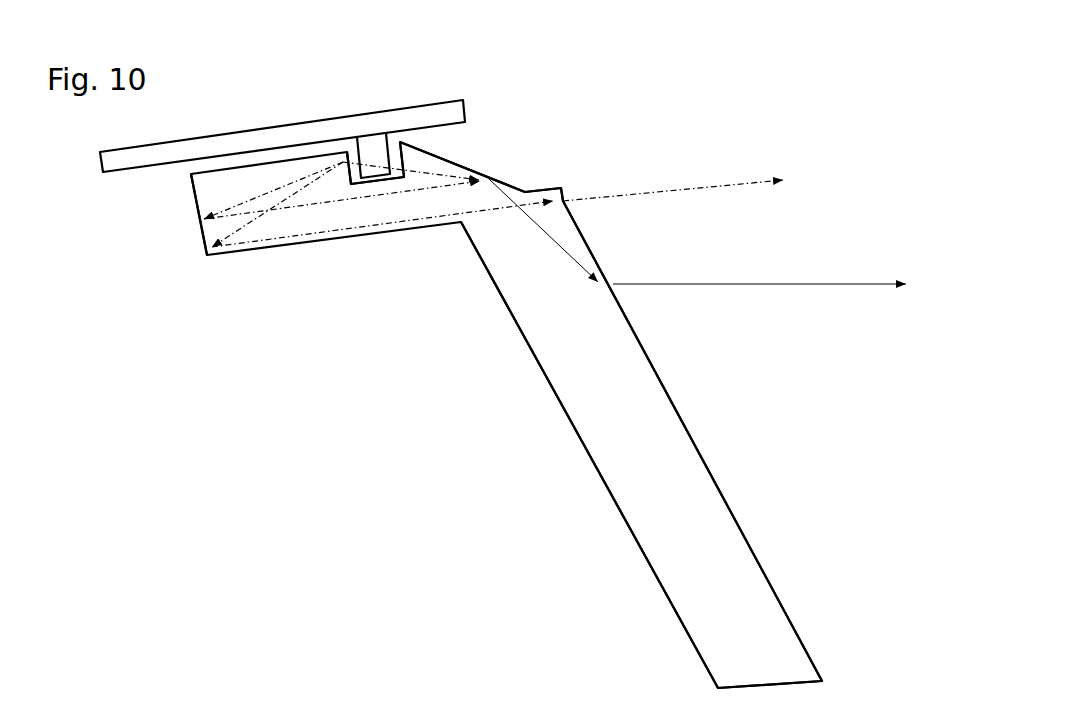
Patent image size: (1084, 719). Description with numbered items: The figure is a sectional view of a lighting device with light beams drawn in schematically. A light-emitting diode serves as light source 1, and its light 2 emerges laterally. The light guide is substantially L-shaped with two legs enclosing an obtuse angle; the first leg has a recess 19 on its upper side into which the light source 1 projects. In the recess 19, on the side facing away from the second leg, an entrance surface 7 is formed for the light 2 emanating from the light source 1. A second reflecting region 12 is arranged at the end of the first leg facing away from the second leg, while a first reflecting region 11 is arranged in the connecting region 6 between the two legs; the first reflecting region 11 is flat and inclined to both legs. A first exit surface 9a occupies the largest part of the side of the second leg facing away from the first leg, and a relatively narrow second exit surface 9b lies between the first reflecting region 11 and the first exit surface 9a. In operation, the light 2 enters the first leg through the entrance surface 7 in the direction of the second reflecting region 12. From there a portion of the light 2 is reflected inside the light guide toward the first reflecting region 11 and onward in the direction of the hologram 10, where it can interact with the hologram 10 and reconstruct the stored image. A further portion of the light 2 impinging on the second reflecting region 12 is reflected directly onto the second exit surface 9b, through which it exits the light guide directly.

The light source 1 is at (377, 147).
The light 2 is at (667, 190).
The connecting region 6 is at (450, 159).
The entrance surface 7 is at (343, 162).
The first exit surface 9a is at (705, 468).
The second exit surface 9b is at (563, 201).
The hologram 10 is at (685, 444).
The first reflecting region 11 is at (492, 176).
The second reflecting region 12 is at (202, 235).
The recess 19 is at (348, 149).